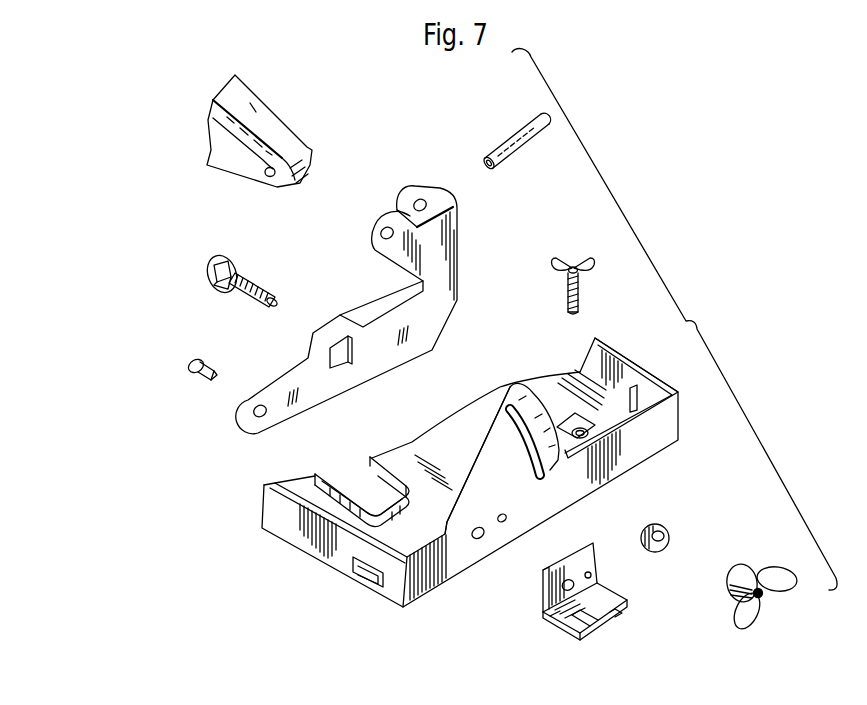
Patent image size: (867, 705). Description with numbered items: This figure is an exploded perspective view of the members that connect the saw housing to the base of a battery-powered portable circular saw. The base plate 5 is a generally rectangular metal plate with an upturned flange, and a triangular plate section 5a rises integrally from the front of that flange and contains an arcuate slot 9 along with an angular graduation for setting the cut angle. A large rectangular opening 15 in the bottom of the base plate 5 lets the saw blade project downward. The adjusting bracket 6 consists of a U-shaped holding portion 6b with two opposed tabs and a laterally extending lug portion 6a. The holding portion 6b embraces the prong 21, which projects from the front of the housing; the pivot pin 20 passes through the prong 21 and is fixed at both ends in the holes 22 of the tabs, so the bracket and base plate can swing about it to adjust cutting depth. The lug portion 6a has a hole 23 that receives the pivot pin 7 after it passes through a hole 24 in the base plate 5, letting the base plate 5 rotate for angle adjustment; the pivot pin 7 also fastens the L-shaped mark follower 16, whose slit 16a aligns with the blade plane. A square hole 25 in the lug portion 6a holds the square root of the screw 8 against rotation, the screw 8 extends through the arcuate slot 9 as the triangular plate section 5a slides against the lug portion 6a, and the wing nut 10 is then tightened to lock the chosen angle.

The base plate 5 is at (495, 477).
The triangular plate section 5a is at (497, 440).
The adjusting bracket 6 is at (347, 300).
The lug portion 6a is at (380, 348).
The holding portion 6b is at (400, 252).
The pivot pin 7 is at (210, 370).
The screw 8 is at (250, 284).
The arcuate slot 9 is at (545, 460).
The wing nut 10 is at (748, 580).
The opening 15 is at (356, 487).
The mark follower 16 is at (590, 609).
The slit 16a is at (595, 605).
The pivot pin 20 is at (510, 140).
The prong 21 is at (268, 130).
The holes 22 is at (422, 198).
The hole 23 is at (265, 413).
The hole 24 is at (478, 540).
The square hole 25 is at (343, 358).